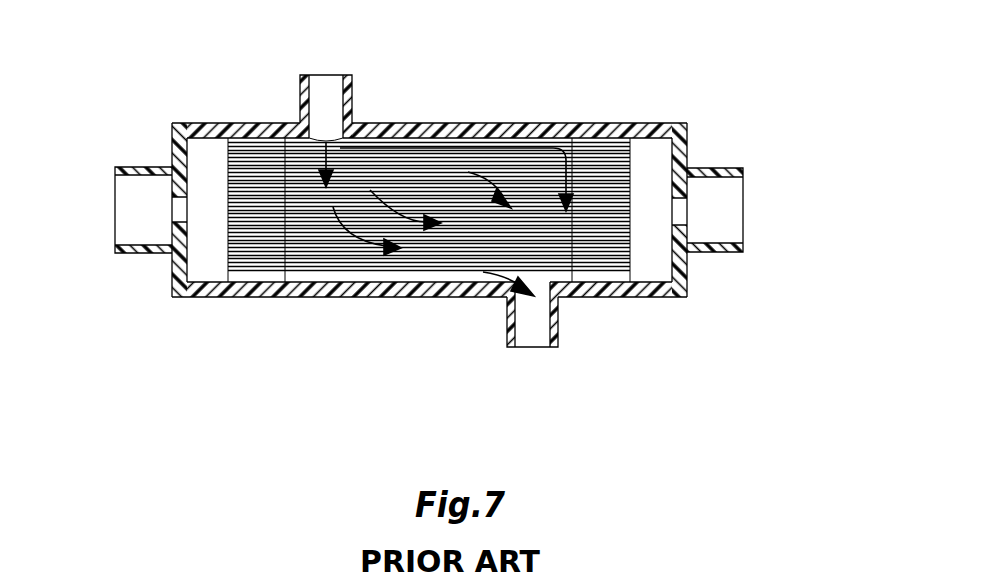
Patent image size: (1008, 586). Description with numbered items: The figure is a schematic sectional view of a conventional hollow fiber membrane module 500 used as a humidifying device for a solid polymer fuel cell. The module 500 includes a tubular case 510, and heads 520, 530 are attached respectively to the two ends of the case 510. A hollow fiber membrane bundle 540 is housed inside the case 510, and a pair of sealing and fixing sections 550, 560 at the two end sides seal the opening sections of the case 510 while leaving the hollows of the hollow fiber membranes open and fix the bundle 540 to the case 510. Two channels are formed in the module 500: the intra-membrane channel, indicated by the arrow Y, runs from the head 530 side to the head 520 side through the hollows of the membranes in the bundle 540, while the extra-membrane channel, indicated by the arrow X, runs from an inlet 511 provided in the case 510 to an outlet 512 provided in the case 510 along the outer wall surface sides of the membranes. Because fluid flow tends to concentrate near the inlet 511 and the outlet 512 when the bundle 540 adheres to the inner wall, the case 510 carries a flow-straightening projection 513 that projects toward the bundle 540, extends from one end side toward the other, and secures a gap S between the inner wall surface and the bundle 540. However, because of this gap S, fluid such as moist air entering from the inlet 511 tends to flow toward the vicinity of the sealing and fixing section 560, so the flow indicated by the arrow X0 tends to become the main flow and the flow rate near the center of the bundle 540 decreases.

The hollow fiber membrane module 500 is at (462, 219).
The tubular case 510 is at (429, 214).
The inlet of the extra-membrane channel 511 is at (340, 82).
The outlet of the extra-membrane channel 512 is at (546, 324).
The flow-straightening projection 513 is at (450, 130).
The head 520 is at (168, 278).
The head 530 is at (690, 275).
The hollow fiber membrane bundle 540 is at (333, 258).
The sealing and fixing section 550 is at (263, 260).
The sealing and fixing section 560 is at (596, 257).
The gap S is at (300, 133).
The arrow indicating the extra-membrane channel X is at (326, 95).
The arrow indicating the main flow X0 is at (566, 136).
The arrow indicating the intra-membrane channel Y is at (228, 211).